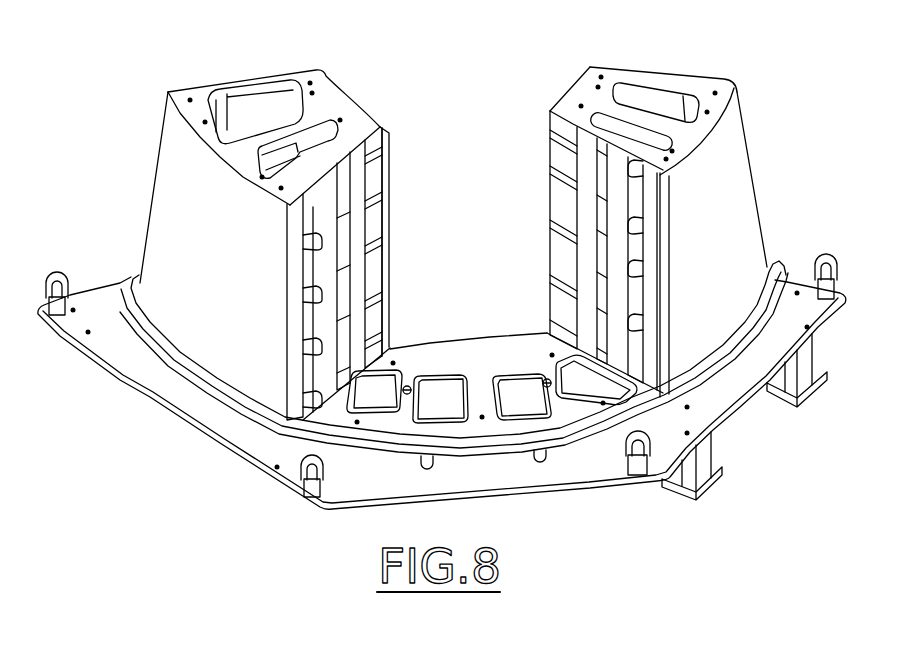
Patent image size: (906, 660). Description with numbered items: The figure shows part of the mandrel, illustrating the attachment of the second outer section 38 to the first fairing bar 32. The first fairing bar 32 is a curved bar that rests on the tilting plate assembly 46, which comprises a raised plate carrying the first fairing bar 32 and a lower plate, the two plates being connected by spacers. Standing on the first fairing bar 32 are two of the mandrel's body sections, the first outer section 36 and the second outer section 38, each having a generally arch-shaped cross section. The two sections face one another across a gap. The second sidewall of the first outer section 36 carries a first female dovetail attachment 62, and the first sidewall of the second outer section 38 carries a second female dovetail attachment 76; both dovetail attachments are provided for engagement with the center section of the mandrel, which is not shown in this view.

The first fairing bar 32 is at (572, 437).
The first outer section 36 is at (737, 197).
The second outer section 38 is at (170, 207).
The tilting plate assembly 46 is at (232, 430).
The first female dovetail attachment 62 is at (556, 140).
The second female dovetail attachment 76 is at (378, 163).